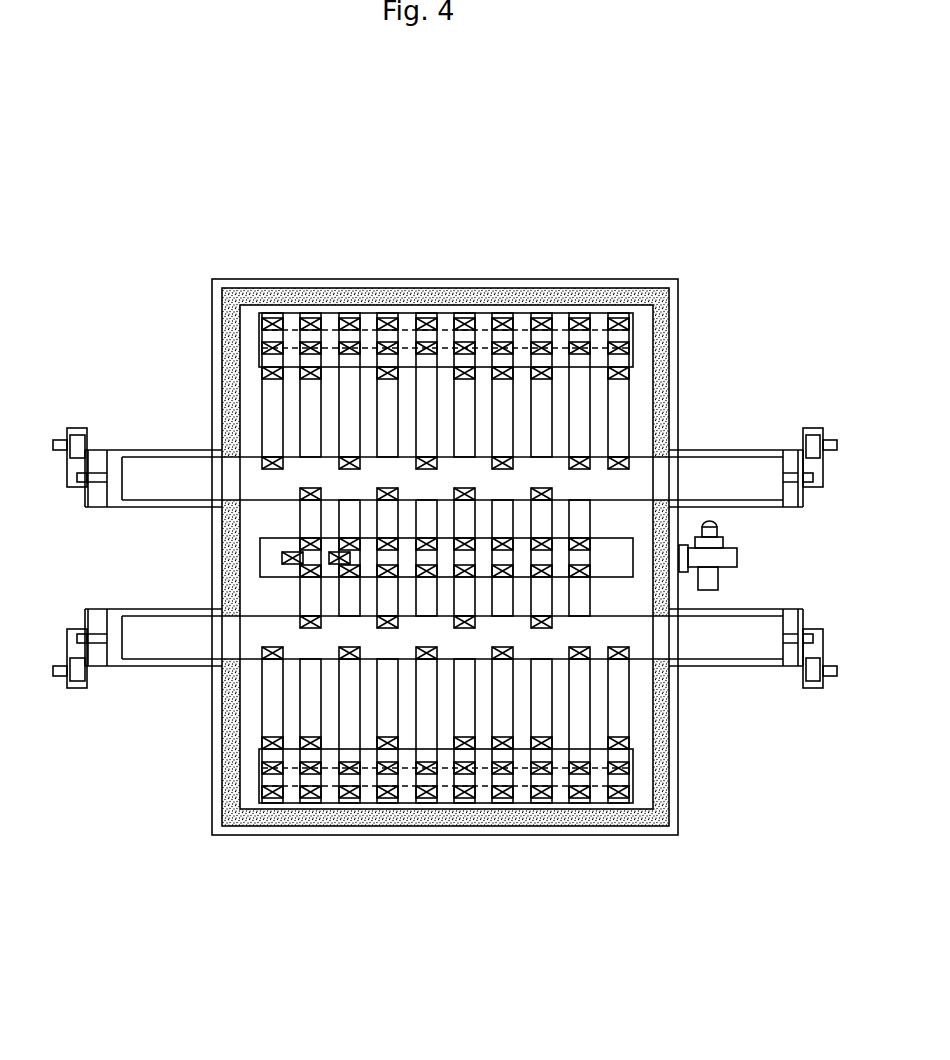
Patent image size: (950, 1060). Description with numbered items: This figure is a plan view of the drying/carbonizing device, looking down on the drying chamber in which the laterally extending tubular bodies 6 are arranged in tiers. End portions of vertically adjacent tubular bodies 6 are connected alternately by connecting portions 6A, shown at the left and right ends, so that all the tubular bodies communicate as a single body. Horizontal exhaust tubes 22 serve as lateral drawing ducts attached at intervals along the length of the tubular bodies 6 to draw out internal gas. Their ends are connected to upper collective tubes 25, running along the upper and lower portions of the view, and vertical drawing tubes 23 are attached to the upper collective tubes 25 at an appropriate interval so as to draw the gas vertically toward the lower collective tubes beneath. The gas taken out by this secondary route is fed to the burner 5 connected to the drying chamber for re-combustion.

The burner 5 is at (732, 560).
The tubular body 6 is at (643, 469).
The connecting portion 6A is at (137, 507).
The horizontal exhaust tube 22 is at (545, 517).
The vertical drawing tube 23 is at (288, 559).
The upper collective tube 25 is at (295, 358).